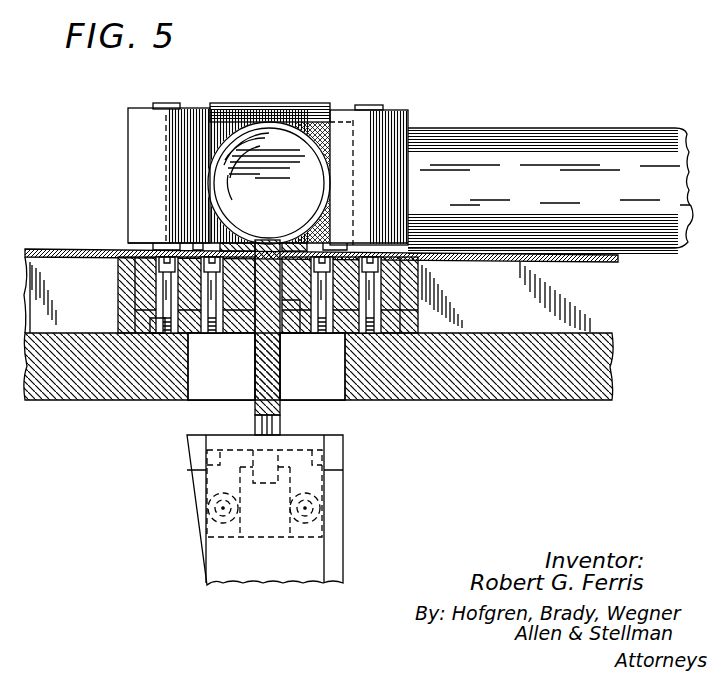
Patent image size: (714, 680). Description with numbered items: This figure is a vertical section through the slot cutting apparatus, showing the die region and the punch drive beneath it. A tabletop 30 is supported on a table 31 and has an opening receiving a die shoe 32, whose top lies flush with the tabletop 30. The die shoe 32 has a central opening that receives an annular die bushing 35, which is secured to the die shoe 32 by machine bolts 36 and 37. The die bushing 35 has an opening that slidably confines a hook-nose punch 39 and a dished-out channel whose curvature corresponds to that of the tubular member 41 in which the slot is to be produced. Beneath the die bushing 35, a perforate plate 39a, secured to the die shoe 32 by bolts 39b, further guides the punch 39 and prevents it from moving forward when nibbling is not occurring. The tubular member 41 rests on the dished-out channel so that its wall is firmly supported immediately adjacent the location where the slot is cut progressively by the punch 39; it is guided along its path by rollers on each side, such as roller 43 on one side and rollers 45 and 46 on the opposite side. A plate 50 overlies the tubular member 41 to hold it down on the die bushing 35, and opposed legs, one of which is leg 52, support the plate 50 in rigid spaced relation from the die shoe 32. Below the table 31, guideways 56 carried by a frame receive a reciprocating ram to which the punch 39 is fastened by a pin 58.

The tabletop 30 is at (615, 264).
The table 31 is at (575, 278).
The die shoe 32 is at (408, 318).
The die bushing 35 is at (306, 308).
The machine bolt 36 is at (325, 336).
The machine bolt 37 is at (207, 336).
The hook-nose punch 39 is at (268, 386).
The perforate plate 39a is at (152, 320).
The bolts 39b is at (164, 288).
The tubular member 41 is at (570, 138).
The roller 43 is at (390, 116).
The roller 45 is at (211, 130).
The roller 46 is at (128, 122).
The plate 50 is at (272, 116).
The leg 52 is at (166, 171).
The guideways 56 is at (197, 516).
The pin 58 is at (290, 455).